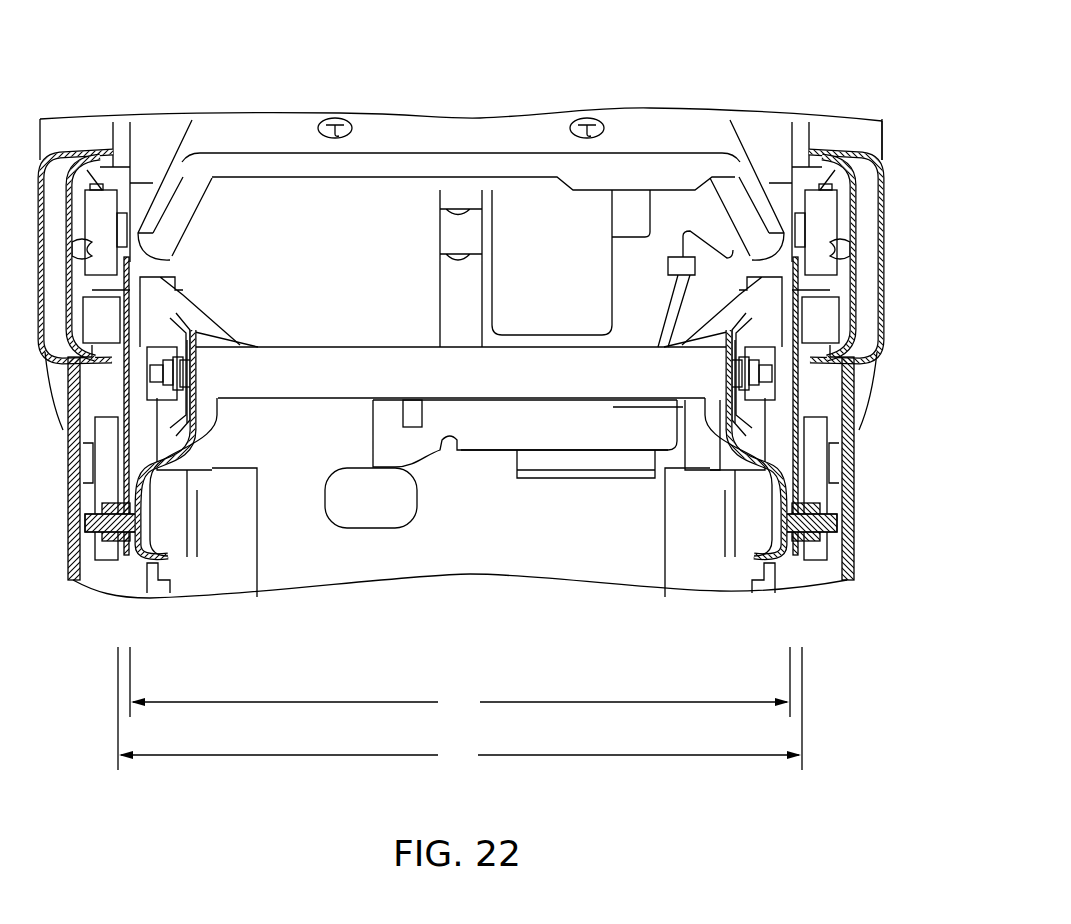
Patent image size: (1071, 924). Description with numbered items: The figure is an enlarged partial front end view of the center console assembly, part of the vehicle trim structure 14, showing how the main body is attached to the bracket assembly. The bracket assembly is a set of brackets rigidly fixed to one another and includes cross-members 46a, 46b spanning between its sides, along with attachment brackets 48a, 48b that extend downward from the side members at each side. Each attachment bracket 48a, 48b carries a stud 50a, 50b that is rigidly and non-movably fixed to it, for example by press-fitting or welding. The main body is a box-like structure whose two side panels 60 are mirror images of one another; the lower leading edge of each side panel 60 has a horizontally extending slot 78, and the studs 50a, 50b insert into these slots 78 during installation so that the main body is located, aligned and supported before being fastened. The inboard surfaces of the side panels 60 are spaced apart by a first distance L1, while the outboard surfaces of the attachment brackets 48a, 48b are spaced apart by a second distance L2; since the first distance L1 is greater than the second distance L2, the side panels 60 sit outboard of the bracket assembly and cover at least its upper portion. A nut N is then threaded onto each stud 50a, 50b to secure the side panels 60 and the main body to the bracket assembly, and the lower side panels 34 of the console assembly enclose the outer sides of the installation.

The vehicle trim structure 14 is at (660, 46).
The lower side panel 34 is at (72, 480).
The cross-member 46a is at (305, 370).
The cross-member 46b is at (487, 437).
The attachment bracket 48a is at (757, 470).
The attachment bracket 48b is at (170, 470).
The stud 50a is at (837, 526).
The stud 50b is at (87, 526).
The side panel 60 is at (121, 447).
The slot 78 is at (127, 557).
The nut N is at (112, 541).
The first distance L1 is at (460, 713).
The second distance L2 is at (460, 687).